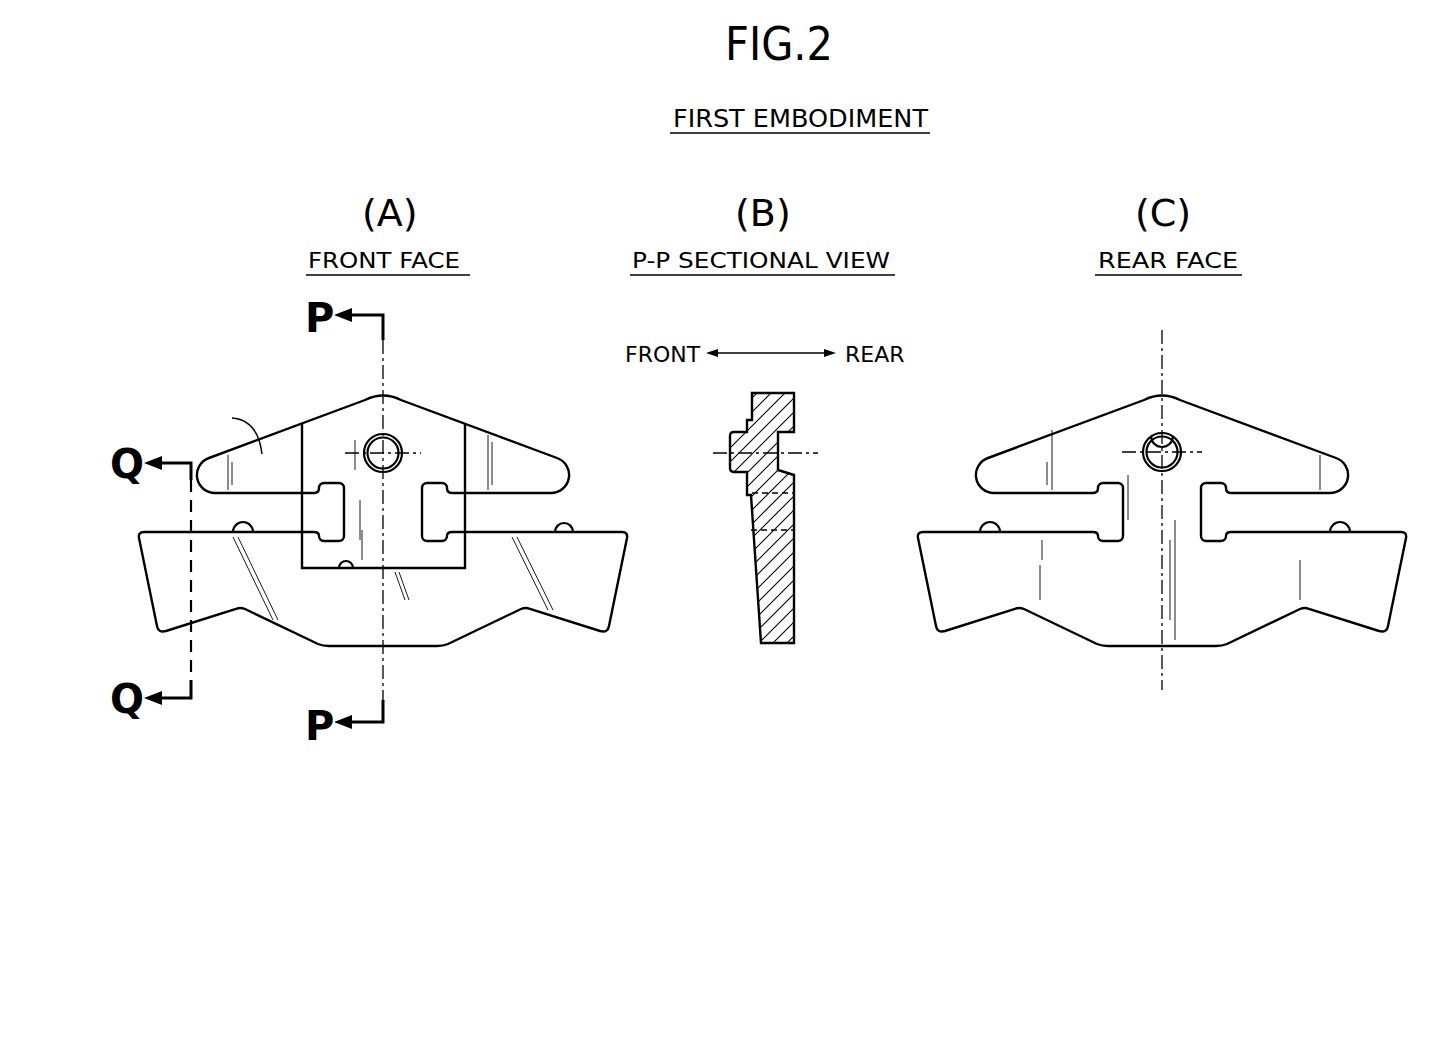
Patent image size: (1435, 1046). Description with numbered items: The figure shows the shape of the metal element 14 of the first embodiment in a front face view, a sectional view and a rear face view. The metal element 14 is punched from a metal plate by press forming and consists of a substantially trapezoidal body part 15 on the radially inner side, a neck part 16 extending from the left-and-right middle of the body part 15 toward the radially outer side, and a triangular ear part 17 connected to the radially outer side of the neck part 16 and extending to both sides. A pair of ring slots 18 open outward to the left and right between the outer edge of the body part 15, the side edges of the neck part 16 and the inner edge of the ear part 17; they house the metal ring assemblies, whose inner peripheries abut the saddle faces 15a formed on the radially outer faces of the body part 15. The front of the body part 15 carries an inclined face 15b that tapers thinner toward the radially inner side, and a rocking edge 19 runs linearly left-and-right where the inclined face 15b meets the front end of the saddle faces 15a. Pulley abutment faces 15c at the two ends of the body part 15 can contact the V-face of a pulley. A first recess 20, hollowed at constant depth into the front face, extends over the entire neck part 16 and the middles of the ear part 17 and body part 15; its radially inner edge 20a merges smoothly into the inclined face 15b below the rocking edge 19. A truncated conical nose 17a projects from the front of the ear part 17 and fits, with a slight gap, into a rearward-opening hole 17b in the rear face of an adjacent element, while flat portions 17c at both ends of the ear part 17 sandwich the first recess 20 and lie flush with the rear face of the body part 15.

The metal element 14 is at (497, 413).
The body part 15 is at (297, 647).
The saddle face 15a is at (236, 534).
The inclined face 15b is at (452, 622).
The pulley abutment face 15c is at (144, 588).
The neck part 16 is at (408, 518).
The ear part 17 is at (283, 429).
The nose 17a is at (389, 446).
The hole 17b is at (783, 444).
The flat portion 17c is at (745, 485).
The ring slot 18 is at (258, 513).
The rocking edge 19 is at (207, 535).
The first recess 20 is at (400, 522).
The radially inner edge 20a is at (341, 575).